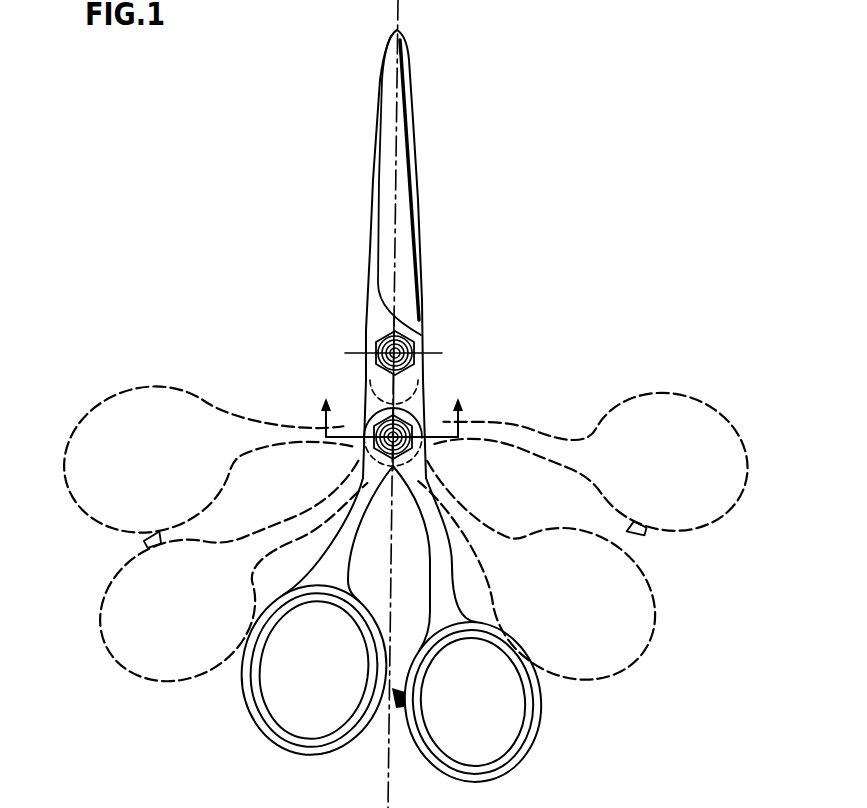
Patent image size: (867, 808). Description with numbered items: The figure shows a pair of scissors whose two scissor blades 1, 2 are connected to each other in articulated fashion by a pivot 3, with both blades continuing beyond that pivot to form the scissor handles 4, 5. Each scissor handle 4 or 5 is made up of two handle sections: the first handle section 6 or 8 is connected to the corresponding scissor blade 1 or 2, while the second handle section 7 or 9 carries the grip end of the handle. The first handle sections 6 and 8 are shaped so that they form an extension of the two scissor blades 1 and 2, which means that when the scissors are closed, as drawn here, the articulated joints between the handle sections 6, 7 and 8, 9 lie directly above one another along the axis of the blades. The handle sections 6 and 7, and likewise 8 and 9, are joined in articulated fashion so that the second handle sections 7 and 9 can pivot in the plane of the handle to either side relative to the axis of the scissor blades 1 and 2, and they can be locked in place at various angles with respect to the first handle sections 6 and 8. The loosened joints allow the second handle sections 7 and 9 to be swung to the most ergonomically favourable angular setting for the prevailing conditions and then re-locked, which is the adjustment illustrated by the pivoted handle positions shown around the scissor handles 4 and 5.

The scissor blade 1 is at (424, 184).
The scissor blade 2 is at (362, 236).
The pivot 3 is at (421, 341).
The scissor handle 4 is at (550, 717).
The scissor handle 5 is at (240, 710).
The first handle section 6 is at (430, 388).
The second handle section 7 is at (452, 555).
The first handle section 8 is at (367, 389).
The second handle section 9 is at (320, 558).